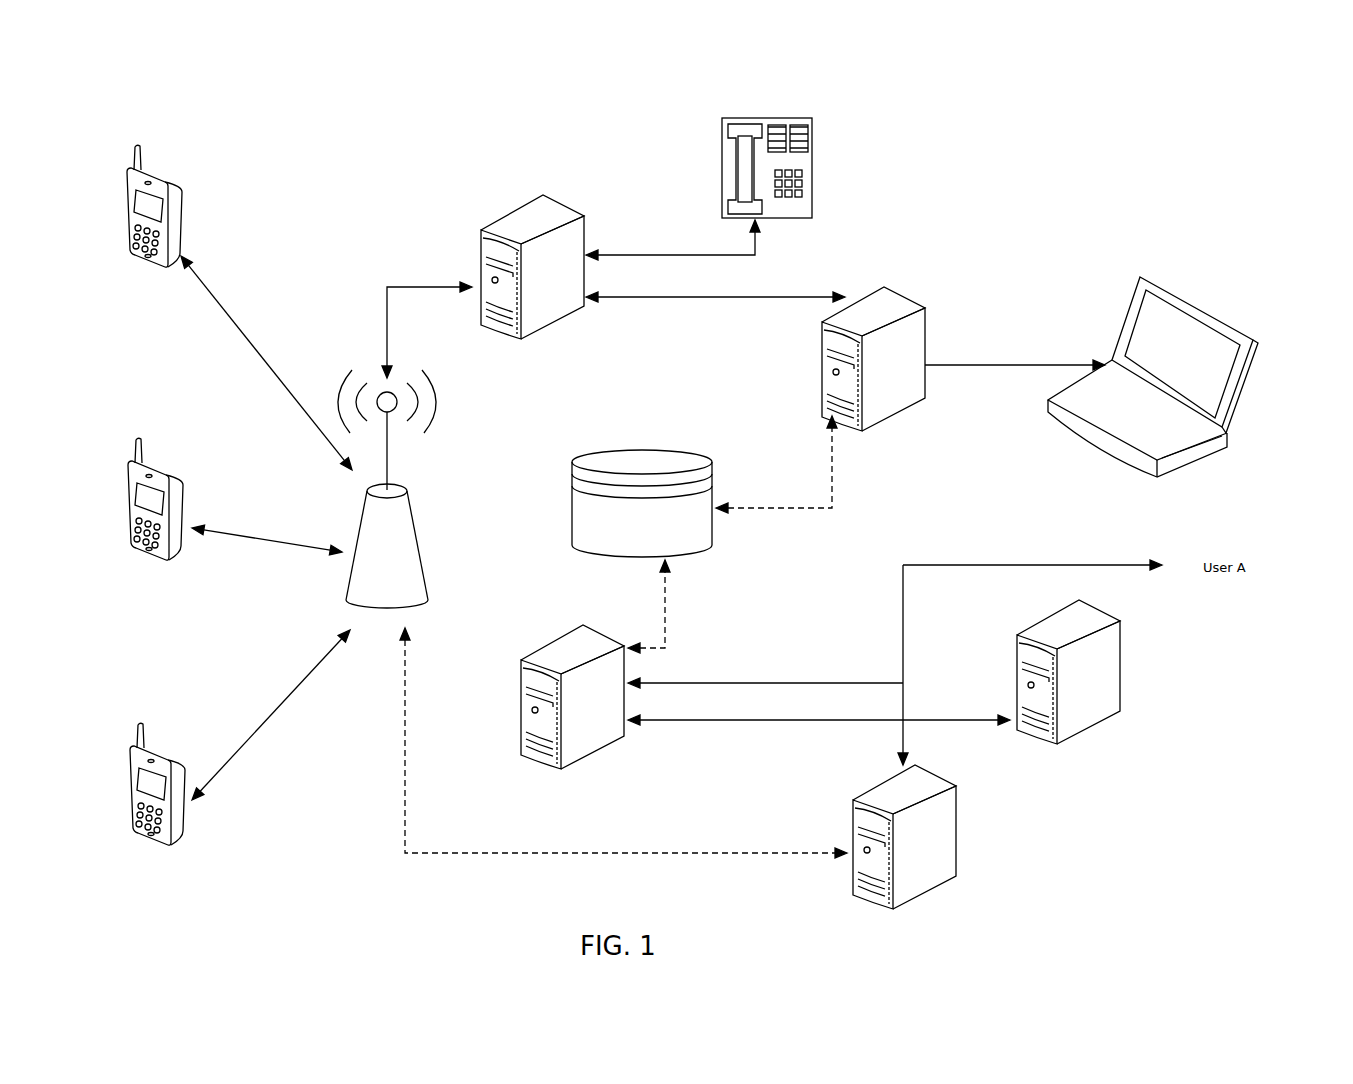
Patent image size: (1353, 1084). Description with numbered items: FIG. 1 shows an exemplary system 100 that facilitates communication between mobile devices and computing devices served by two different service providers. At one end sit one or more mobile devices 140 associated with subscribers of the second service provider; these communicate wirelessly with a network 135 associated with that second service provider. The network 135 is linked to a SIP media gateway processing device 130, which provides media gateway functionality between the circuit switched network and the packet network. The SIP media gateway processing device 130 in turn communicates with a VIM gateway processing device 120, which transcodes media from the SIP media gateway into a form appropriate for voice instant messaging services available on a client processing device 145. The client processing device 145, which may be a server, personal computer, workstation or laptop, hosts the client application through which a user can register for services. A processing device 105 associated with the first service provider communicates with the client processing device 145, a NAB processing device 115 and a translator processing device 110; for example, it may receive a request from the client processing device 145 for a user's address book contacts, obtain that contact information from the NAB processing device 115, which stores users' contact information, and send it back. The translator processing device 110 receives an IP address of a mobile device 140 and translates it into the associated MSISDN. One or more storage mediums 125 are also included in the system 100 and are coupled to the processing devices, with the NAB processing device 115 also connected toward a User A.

The system 100 is at (991, 105).
The processing device 105 is at (528, 647).
The translator processing device 110 is at (1120, 663).
The network address book (NAB) processing device 115 is at (956, 832).
The voice/instant messaging (VIM) gateway processing device 120 is at (924, 327).
The storage medium 125 is at (582, 456).
The SIP media gateway processing device 130 is at (572, 210).
The network 135 is at (420, 548).
The mobile devices 140 is at (183, 189).
The client processing device 145 is at (1248, 373).